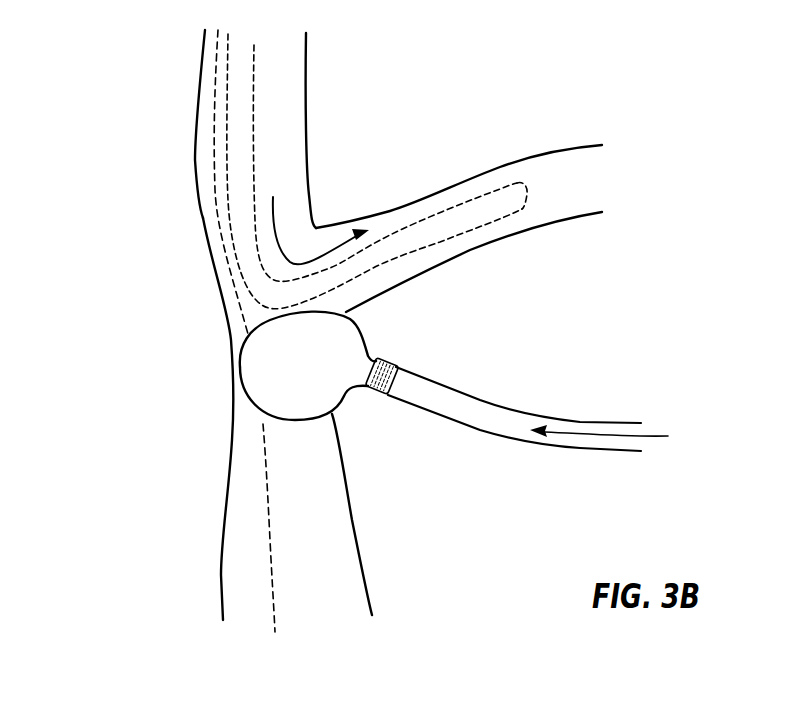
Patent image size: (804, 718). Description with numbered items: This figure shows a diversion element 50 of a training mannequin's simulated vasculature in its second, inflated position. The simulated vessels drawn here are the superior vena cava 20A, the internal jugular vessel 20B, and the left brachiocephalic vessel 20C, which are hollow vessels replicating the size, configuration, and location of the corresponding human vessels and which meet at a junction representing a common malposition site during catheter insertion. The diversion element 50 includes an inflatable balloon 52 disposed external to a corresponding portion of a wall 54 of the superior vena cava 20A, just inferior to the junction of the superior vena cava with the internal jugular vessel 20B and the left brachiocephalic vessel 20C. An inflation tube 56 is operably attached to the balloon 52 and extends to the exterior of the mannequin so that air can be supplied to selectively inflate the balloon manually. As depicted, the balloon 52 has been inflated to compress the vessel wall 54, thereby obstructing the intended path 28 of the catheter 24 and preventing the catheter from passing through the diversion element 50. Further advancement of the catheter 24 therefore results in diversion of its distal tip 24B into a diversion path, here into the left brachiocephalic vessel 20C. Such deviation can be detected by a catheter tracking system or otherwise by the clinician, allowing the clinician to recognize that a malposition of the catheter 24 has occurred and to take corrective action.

The superior vena cava 20A is at (234, 520).
The internal jugular vessel 20B is at (297, 91).
The left brachiocephalic vessel 20C is at (483, 178).
The catheter 24 is at (247, 252).
The distal tip 24B is at (527, 193).
The intended path 28 is at (213, 120).
The diversion element 50 is at (412, 431).
The balloon 52 is at (342, 333).
The wall 54 is at (292, 421).
The inflation tube 56 is at (485, 409).